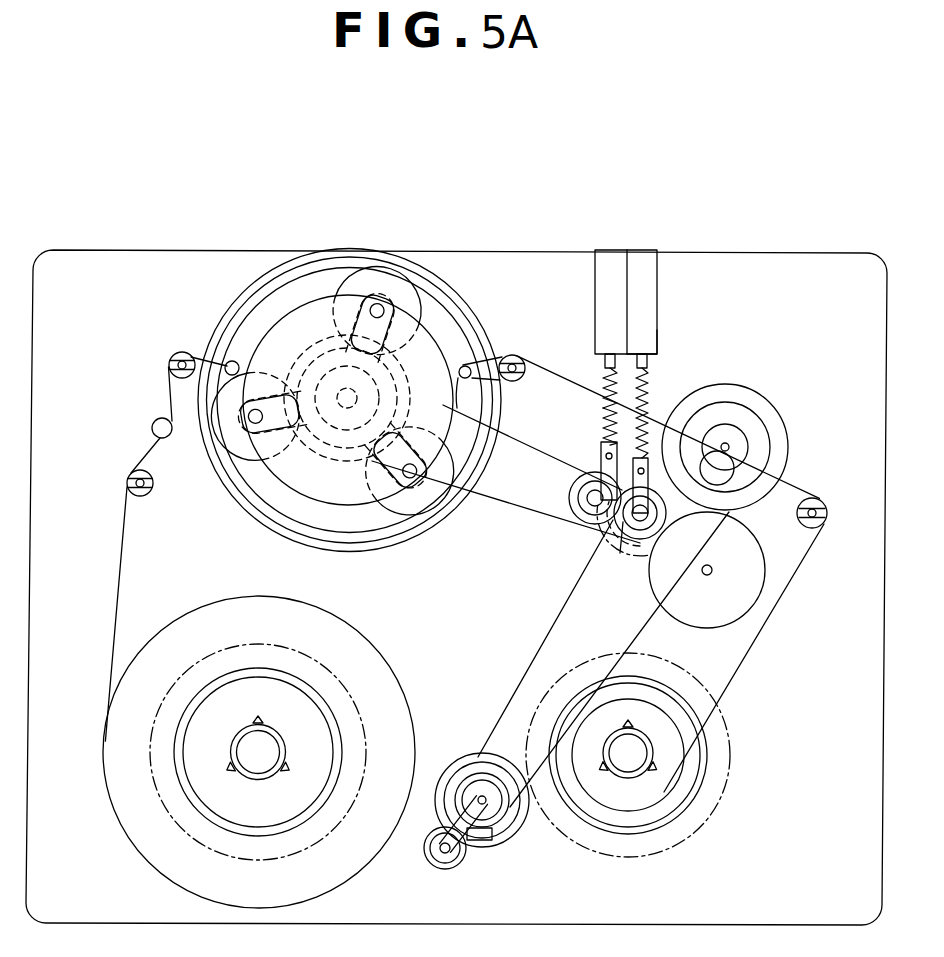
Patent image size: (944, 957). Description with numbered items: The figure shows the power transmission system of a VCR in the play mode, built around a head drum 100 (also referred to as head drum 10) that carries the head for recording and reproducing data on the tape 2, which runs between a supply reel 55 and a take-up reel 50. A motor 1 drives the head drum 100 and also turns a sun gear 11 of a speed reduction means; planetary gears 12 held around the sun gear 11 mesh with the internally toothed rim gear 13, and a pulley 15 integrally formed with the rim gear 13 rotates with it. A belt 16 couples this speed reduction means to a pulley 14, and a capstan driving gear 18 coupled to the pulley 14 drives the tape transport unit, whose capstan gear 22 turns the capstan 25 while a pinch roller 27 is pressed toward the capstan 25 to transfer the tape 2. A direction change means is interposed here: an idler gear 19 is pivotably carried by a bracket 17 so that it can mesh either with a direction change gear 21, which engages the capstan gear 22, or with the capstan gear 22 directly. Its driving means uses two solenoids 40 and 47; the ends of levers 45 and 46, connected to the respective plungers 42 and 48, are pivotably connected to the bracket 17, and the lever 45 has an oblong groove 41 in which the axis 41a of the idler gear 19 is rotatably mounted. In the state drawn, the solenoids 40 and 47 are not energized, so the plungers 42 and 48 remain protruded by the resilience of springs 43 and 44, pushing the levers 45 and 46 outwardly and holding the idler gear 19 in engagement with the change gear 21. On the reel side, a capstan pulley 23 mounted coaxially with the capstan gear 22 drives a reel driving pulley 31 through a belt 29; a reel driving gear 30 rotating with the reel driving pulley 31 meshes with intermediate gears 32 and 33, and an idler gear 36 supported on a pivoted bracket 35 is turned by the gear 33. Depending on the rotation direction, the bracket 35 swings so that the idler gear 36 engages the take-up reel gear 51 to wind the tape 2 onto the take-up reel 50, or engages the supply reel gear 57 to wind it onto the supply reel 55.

The motor 1 is at (330, 352).
The tape 2 is at (112, 598).
The head drum 10 is at (456, 266).
The sun gear 11 is at (478, 340).
The planetary gears 12 is at (422, 505).
The rim gear 13 is at (258, 510).
The pulley 14 is at (588, 484).
The pulley 15 is at (349, 440).
The belt 16 is at (590, 512).
The bracket 17 is at (622, 518).
The capstan driving gear 18 is at (582, 498).
The idler gear 19 is at (620, 553).
The direction change gear 21 is at (718, 590).
The capstan gear 22 is at (784, 448).
The capstan pulley 23 is at (741, 416).
The capstan 25 is at (733, 445).
The pinch roller 27 is at (737, 513).
The belt 29 is at (551, 645).
The reel driving gear 30 is at (480, 753).
The reel driving pulley 31 is at (497, 838).
The intermediate gear 32 is at (462, 866).
The intermediate gear 33 is at (426, 858).
The bracket 35 is at (447, 784).
The idler gear 36 is at (517, 822).
The solenoid 40 is at (650, 303).
The oblong groove 41 is at (677, 515).
The axis of the idler gear 41a is at (666, 595).
The plunger 42 is at (660, 372).
The spring 43 is at (653, 356).
The spring 44 is at (602, 370).
The lever 45 is at (652, 438).
The lever 46 is at (604, 448).
The solenoid 47 is at (604, 303).
The plunger 48 is at (604, 410).
The take-up reel 50 is at (660, 790).
The take-up reel gear 51 is at (665, 842).
The supply reel 55 is at (213, 795).
The supply reel gear 57 is at (283, 845).
The head drum 100 is at (425, 343).